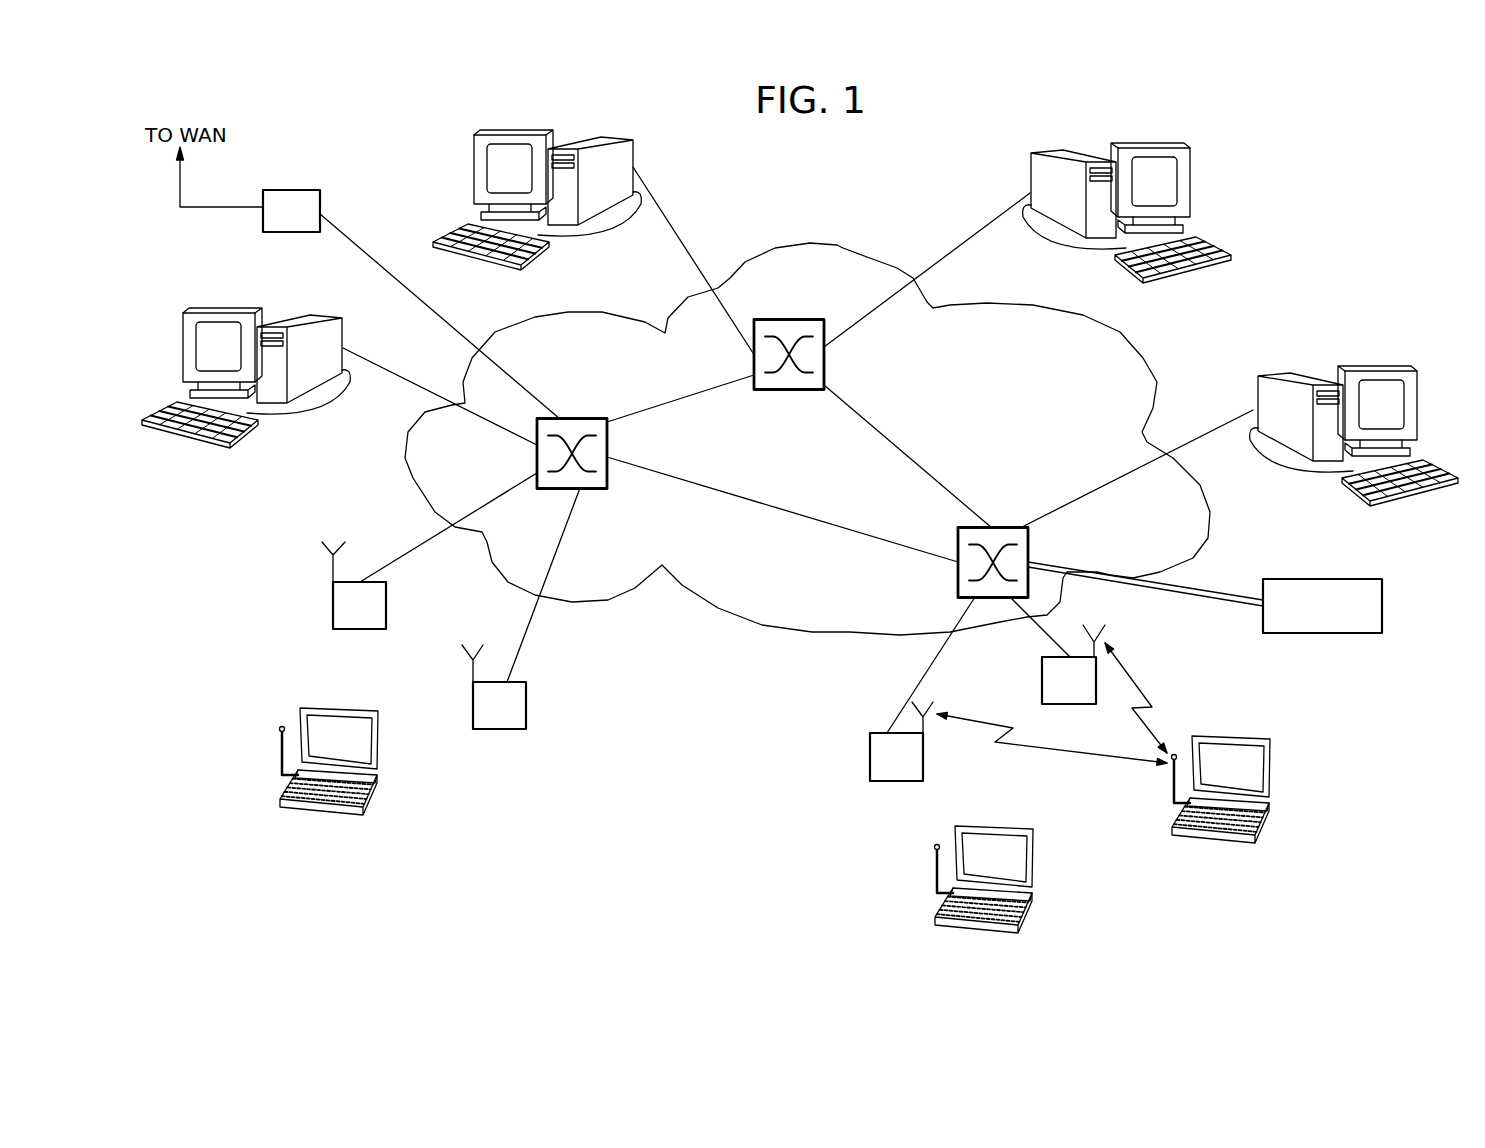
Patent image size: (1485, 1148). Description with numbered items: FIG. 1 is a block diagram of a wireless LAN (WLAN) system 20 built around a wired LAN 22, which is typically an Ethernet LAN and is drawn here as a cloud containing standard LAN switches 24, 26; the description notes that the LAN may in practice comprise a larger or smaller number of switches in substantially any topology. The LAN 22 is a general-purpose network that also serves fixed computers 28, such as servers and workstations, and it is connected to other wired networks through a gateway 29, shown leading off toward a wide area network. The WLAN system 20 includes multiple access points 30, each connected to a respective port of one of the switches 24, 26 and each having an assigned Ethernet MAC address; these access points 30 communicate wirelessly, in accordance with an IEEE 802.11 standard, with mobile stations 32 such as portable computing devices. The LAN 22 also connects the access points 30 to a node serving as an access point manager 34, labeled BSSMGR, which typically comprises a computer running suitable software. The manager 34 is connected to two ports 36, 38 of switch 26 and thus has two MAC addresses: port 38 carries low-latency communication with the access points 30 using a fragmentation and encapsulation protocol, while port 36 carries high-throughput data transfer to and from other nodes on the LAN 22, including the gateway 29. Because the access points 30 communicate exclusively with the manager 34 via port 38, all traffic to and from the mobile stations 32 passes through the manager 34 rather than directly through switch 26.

The wireless LAN (WLAN) system 20 is at (1358, 205).
The wired LAN 22 is at (837, 245).
The LAN switch 24 is at (805, 392).
The LAN switch 26 is at (1028, 537).
The fixed computer 28 is at (300, 318).
The gateway 29 is at (312, 190).
The access point 30 is at (333, 603).
The mobile station 32 is at (380, 783).
The access point manager (BSS manager) 34 is at (1333, 578).
The port 36 is at (1213, 594).
The port 38 is at (1188, 603).